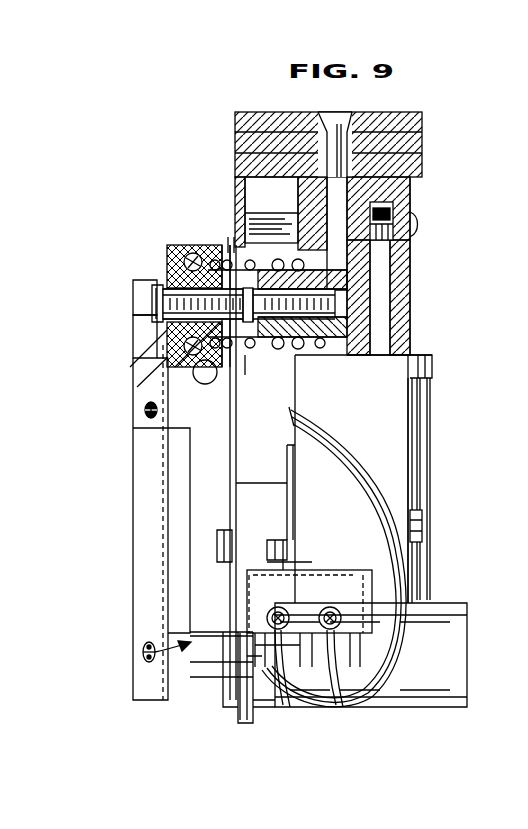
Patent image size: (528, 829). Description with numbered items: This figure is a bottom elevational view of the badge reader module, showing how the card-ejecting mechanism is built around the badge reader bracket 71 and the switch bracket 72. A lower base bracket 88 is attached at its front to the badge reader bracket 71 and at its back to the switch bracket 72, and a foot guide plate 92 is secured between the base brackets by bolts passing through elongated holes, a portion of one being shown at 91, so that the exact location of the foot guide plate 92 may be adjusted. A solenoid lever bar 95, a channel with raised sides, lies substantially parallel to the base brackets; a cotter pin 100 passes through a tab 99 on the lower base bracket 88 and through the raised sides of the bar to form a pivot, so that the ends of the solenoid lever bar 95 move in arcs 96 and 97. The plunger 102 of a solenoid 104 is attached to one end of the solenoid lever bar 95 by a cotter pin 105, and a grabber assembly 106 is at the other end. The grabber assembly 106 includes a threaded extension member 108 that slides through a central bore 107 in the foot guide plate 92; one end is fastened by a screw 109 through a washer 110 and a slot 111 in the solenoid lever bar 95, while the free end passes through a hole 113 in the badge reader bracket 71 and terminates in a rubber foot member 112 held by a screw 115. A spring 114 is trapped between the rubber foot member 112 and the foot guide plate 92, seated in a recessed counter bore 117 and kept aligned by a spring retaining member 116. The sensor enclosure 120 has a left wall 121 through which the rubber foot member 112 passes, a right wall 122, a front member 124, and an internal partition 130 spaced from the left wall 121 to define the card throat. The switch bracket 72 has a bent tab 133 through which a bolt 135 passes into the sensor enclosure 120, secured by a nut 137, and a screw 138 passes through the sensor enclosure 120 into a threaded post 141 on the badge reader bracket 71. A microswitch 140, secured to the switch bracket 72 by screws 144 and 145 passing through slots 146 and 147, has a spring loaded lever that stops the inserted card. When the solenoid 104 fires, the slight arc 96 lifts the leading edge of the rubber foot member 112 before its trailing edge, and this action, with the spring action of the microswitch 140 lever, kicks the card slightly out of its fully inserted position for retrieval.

The badge reader bracket 71 is at (237, 182).
The switch bracket 72 is at (250, 547).
The lower base bracket 88 is at (200, 453).
The elongated hole 91 is at (215, 367).
The foot guide plate 92 is at (180, 240).
The solenoid lever bar 95 is at (135, 488).
The arc 96 is at (147, 307).
The arc 97 is at (148, 662).
The tab 99 is at (148, 410).
The cotter pin 100 is at (160, 410).
The plunger 102 is at (217, 680).
The solenoid 104 is at (435, 707).
The cotter pin 105 is at (144, 648).
The grabber assembly 106 is at (104, 365).
The central bore 107 is at (137, 340).
The threaded extension member 108 is at (163, 280).
The screw 109 is at (152, 300).
The washer 110 is at (162, 298).
The slot 111 is at (163, 289).
The rubber foot member 112 is at (393, 260).
The hole 113 is at (217, 240).
The spring 114 is at (293, 213).
The screw 115 is at (407, 333).
The spring retaining member 116 is at (302, 372).
The counter bore 117 is at (137, 387).
The sensor enclosure 120 is at (372, 409).
The left wall 121 is at (293, 180).
The right wall 122 is at (412, 310).
The front member 124 is at (235, 170).
The internal partition 130 is at (393, 288).
The bent tab 133 is at (286, 467).
The bolt 135 is at (270, 524).
The nut 137 is at (425, 523).
The screw 138 is at (417, 228).
The microswitch 140 is at (258, 210).
The threaded post 141 is at (314, 555).
The screw 144 is at (288, 608).
The screw 145 is at (341, 608).
The slot 146 is at (284, 708).
The slot 147 is at (338, 708).